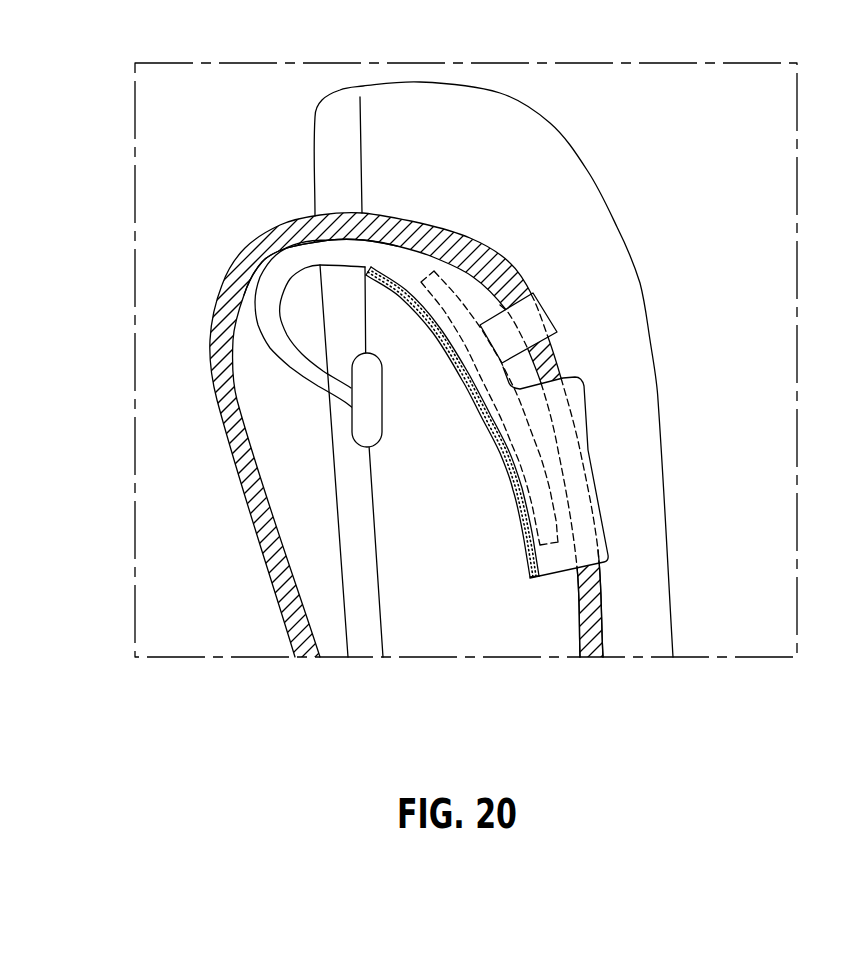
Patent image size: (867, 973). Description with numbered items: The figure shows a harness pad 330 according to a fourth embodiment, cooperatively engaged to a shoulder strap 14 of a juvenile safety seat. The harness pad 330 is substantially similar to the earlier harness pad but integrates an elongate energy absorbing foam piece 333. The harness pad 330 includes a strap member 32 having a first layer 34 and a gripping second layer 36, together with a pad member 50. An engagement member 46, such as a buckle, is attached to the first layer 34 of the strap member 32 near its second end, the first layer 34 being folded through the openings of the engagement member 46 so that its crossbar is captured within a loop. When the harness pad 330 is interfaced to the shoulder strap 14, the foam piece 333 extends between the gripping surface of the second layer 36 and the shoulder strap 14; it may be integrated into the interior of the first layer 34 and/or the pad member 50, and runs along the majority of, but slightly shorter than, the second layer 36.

The shoulder strap 14 is at (462, 240).
The strap member 32 is at (270, 378).
The first layer 34 is at (255, 290).
The second layer 36 is at (527, 566).
The engagement member 46 is at (382, 407).
The pad member 50 is at (610, 385).
The harness pad 330 is at (490, 542).
The energy absorbing foam piece 333 is at (540, 487).